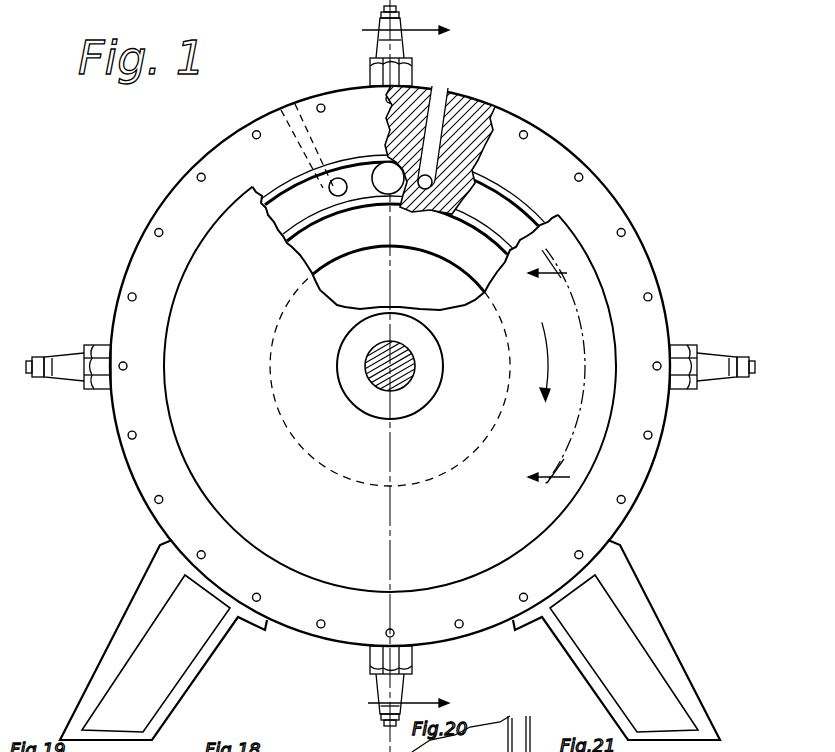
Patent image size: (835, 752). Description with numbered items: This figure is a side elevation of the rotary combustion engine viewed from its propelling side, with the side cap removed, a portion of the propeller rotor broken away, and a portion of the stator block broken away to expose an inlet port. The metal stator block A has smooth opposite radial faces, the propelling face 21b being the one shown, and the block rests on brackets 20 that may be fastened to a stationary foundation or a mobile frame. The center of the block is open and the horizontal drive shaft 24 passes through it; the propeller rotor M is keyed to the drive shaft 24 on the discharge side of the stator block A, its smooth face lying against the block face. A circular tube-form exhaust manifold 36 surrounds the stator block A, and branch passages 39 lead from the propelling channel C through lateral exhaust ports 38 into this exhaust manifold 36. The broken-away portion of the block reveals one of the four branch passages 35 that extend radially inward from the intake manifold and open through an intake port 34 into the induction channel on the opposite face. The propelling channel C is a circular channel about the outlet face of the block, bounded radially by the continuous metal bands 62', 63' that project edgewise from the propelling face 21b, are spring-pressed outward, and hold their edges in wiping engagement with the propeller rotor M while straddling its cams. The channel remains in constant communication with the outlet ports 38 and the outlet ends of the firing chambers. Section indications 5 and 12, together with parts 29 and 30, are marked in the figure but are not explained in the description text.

The propelling face 21b is at (572, 193).
The stator block A is at (553, 163).
The outer band 63' is at (403, 190).
The inner band 62' is at (397, 231).
The propelling channel C is at (295, 206).
The propeller rotor M is at (580, 455).
The section line 5 is at (548, 376).
The drive shaft 24 is at (400, 384).
The branch passage 35 is at (427, 112).
The roller 29 is at (386, 194).
The exhaust port 38 is at (338, 196).
The intake port 34 is at (426, 190).
The branch passage 39 is at (315, 152).
The exhaust manifold 36 is at (380, 56).
The adjusting bolt 30 is at (76, 378).
The section line 12 is at (394, 372).
The bracket 20 is at (127, 643).